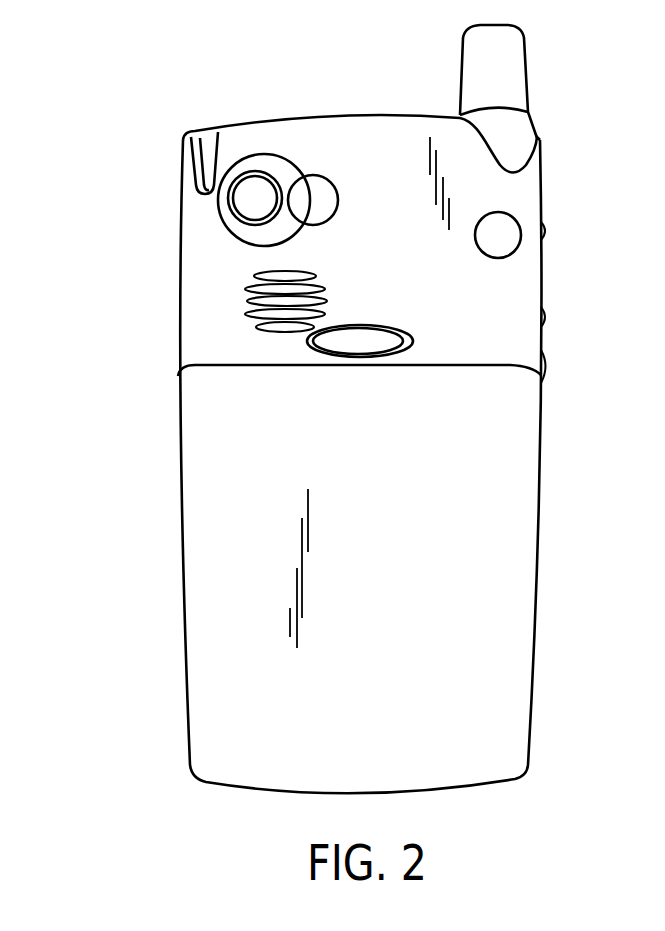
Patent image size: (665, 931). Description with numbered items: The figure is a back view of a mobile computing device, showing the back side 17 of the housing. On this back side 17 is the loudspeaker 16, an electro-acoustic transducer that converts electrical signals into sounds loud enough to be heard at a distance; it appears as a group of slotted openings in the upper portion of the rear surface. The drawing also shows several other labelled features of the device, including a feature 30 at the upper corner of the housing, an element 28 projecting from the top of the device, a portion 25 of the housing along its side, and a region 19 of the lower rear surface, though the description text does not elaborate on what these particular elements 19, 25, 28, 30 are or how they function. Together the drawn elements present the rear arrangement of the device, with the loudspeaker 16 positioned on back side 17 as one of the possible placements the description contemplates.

The loudspeaker 16 is at (247, 300).
The back side 17 is at (409, 565).
The rear cover 19 is at (523, 433).
The housing 25 is at (178, 425).
The antenna 28 is at (525, 60).
The slot 30 is at (207, 127).